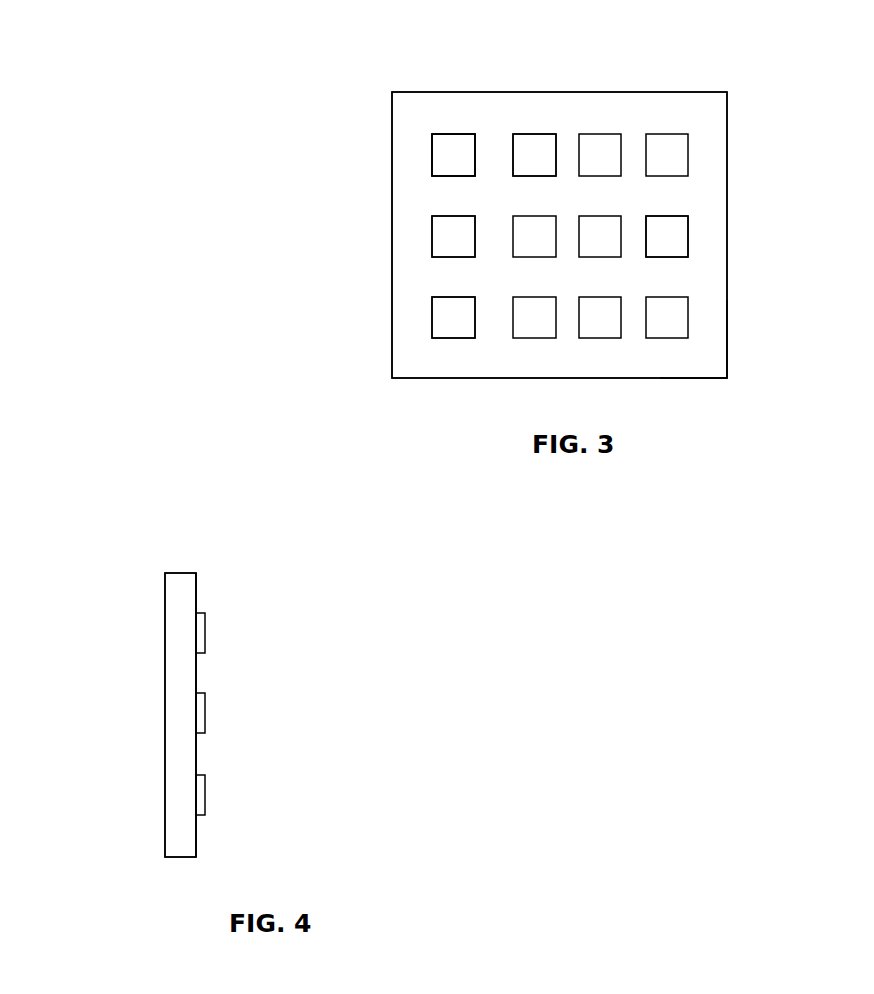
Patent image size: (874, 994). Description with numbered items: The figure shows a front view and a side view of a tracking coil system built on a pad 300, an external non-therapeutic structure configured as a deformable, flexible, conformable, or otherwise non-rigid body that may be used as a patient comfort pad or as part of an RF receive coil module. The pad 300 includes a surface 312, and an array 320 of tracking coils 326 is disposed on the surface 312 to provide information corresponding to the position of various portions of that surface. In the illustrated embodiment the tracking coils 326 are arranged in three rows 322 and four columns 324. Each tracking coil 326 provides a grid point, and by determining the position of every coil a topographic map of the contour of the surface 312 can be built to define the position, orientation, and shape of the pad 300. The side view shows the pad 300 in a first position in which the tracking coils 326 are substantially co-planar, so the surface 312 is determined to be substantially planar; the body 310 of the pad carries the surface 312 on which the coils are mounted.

In FIG. 3, the pad 300 is at (345, 55).
In FIG. 4, the pad 300 is at (112, 512).
In FIG. 3, the substrate 310 is at (727, 138).
In FIG. 4, the substrate 310 is at (180, 572).
In FIG. 3, the surface 312 is at (703, 320).
In FIG. 4, the surface 312 is at (197, 590).
In FIG. 3, the array 320 is at (635, 122).
In FIG. 3, the rows 322 is at (430, 152).
In FIG. 4, the rows 322 is at (206, 636).
In FIG. 3, the columns 324 is at (447, 127).
In FIG. 3, the tracking coils 326 is at (426, 318).